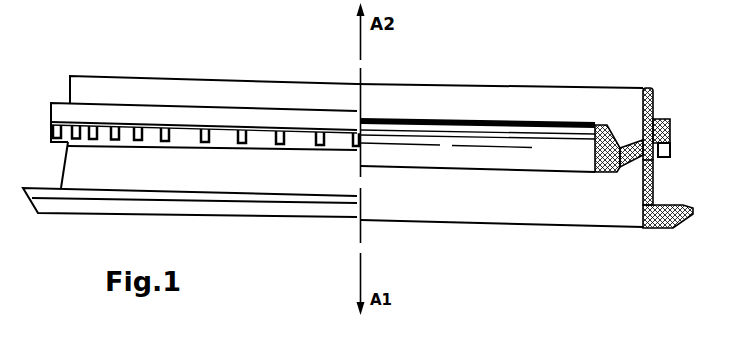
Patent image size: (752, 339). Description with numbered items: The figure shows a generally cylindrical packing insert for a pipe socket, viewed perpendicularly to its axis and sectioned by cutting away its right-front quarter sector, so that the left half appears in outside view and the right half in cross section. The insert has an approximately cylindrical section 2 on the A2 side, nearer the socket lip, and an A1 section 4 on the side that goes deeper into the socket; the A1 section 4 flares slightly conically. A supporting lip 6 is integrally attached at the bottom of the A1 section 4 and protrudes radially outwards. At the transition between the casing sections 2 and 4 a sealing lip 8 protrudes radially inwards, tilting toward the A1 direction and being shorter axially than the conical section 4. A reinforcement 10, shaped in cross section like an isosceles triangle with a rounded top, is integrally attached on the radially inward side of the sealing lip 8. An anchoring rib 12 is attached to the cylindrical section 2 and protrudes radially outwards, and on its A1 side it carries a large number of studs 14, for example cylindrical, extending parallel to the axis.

The cylindrical section 2 is at (100, 77).
The A1 section 4 is at (64, 167).
The supporting lip 6 is at (33, 207).
The sealing lip 8 is at (632, 165).
The reinforcement 10 is at (493, 120).
The anchoring rib 12 is at (152, 106).
The studs 14 is at (207, 146).